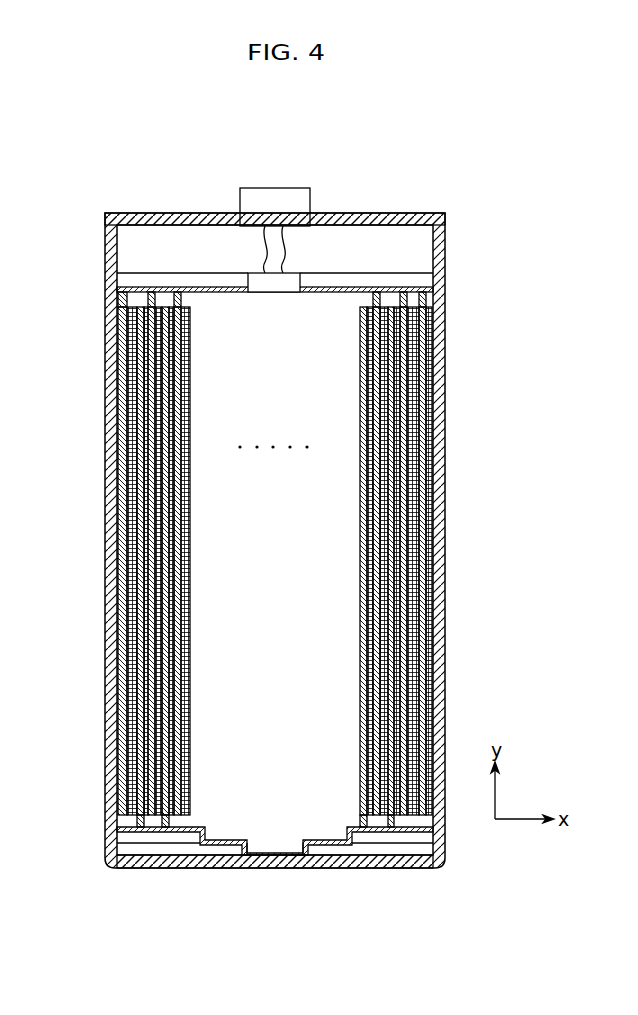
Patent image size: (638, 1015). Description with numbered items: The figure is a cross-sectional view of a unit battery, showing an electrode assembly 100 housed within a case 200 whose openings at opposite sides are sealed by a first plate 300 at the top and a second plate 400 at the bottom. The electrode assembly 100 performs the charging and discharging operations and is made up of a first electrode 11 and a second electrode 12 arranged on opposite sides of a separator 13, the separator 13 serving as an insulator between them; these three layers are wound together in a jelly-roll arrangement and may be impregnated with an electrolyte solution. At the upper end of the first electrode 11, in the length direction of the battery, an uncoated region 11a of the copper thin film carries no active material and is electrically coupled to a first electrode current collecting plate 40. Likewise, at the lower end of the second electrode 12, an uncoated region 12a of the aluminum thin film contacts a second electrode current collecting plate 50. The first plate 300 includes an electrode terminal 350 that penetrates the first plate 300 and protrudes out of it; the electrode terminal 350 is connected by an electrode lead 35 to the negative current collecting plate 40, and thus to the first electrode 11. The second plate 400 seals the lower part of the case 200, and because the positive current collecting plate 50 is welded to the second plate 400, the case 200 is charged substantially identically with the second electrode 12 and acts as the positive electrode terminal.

The first electrode 11 is at (122, 352).
The uncoated region 11a is at (124, 300).
The second electrode 12 is at (132, 757).
The uncoated region 12a is at (127, 823).
The separator 13 is at (130, 541).
The electrode lead 35 is at (262, 262).
The first electrode current collecting plate 40 is at (410, 279).
The second electrode current collecting plate 50 is at (150, 838).
The electrode assembly 100 is at (284, 560).
The case 200 is at (445, 480).
The first plate 300 is at (395, 213).
The electrode terminal 350 is at (275, 188).
The second plate 400 is at (272, 866).